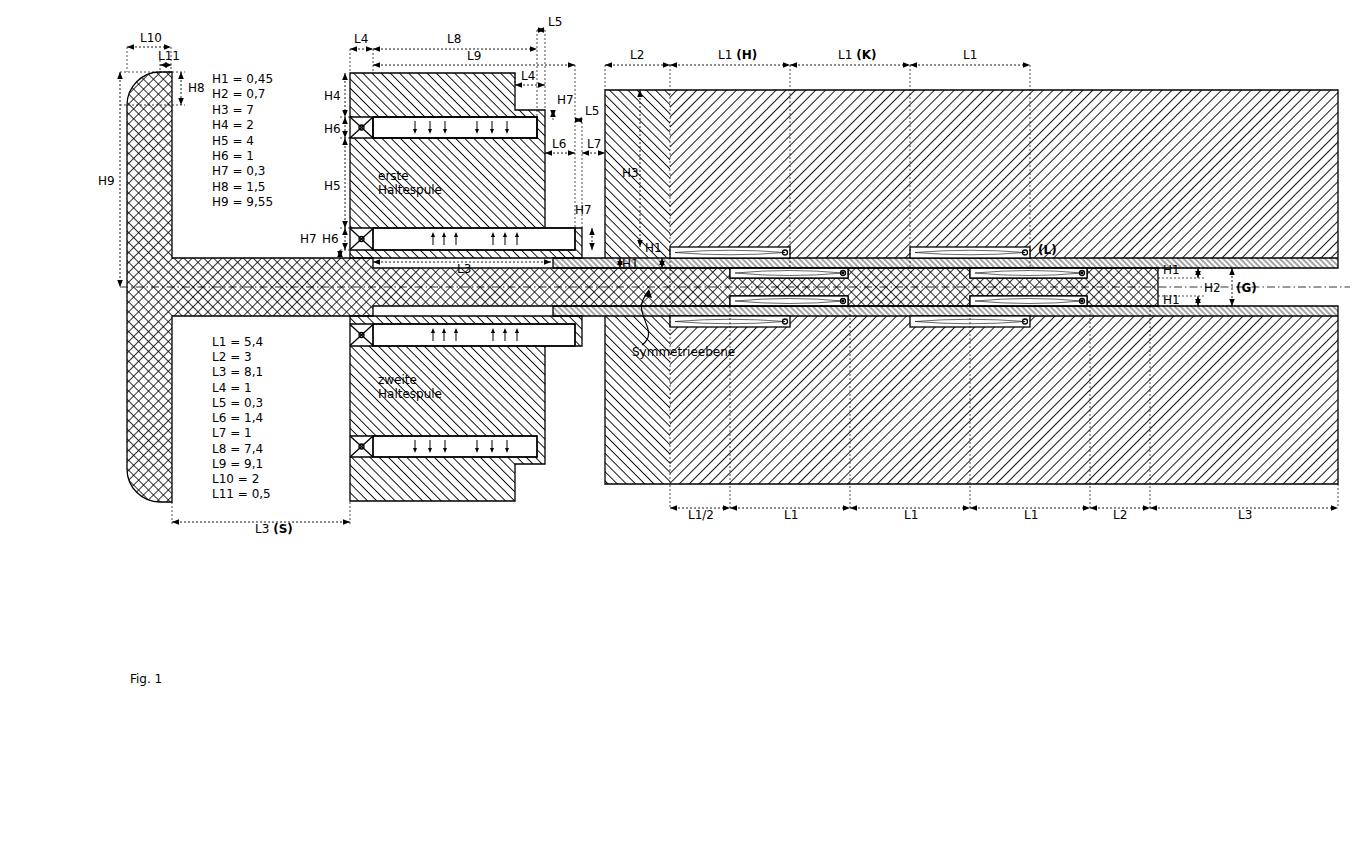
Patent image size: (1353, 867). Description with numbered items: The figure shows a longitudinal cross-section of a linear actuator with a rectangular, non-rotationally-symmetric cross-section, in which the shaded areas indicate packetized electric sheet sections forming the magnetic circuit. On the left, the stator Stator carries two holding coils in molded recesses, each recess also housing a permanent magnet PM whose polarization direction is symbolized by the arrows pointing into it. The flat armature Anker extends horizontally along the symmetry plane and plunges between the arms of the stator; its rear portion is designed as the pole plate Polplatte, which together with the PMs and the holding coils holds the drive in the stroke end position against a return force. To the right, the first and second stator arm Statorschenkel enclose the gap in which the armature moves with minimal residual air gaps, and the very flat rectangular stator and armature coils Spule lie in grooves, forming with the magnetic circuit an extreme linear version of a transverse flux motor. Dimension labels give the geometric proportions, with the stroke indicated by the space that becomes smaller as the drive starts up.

The armature Anker is at (642, 287).
The pole plate Polplatte is at (149, 287).
The stator Stator is at (466, 287).
The permanent magnet PM is at (455, 285).
The stator arm Statorschenkel is at (945, 287).
The coil Spule is at (875, 359).